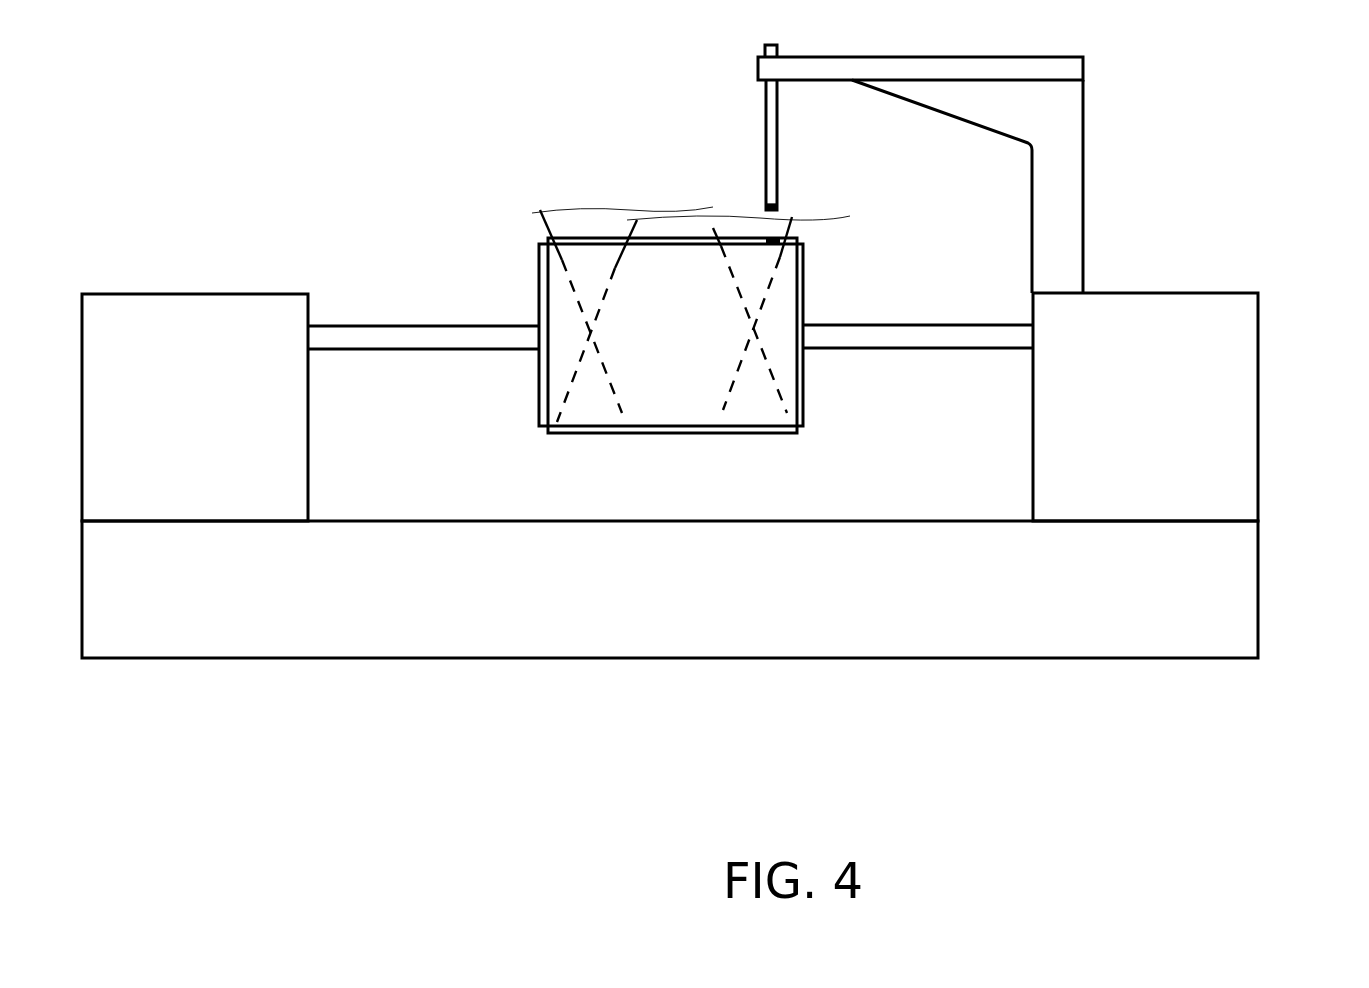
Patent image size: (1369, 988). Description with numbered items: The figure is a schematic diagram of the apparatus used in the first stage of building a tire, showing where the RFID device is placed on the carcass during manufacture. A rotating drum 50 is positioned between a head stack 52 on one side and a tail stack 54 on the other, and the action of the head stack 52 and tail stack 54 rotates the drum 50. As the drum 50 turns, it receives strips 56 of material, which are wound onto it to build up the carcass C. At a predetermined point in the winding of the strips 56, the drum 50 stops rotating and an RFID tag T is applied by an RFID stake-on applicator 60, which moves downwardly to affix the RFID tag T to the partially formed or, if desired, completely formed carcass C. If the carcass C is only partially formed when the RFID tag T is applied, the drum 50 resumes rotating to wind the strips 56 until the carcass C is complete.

The rotating drum 50 is at (540, 255).
The head stack 52 is at (195, 312).
The tail stack 54 is at (1253, 378).
The strips 56 is at (583, 212).
The RFID stake-on applicator 60 is at (766, 137).
The RFID tag T is at (765, 208).
The carcass C is at (683, 430).